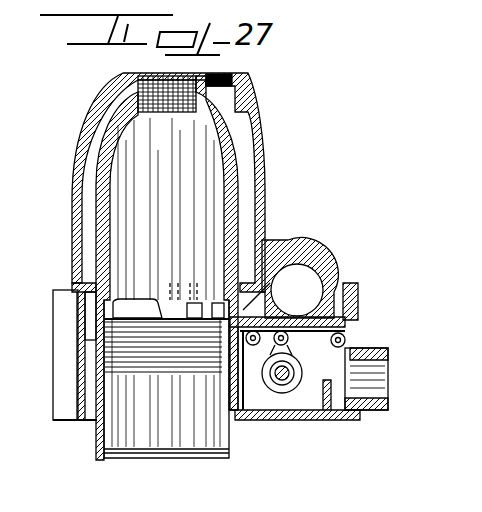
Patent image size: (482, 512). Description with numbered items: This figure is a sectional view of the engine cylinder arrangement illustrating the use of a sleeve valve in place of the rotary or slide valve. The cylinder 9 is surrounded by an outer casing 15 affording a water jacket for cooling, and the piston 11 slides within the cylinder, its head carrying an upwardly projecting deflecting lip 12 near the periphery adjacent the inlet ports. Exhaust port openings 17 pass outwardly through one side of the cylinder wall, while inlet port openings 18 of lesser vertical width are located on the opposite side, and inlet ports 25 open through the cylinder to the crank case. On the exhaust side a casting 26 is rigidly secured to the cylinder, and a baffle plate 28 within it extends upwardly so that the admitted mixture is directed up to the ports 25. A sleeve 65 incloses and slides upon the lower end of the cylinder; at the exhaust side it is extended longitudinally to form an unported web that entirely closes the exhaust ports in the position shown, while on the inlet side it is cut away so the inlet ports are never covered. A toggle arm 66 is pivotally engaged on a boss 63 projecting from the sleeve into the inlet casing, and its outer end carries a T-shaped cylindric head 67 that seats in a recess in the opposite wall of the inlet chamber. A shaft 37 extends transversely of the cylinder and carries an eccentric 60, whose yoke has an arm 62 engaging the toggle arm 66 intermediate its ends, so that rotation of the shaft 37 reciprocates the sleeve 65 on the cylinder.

The cylinder 9 is at (238, 152).
The outer casing 15 is at (262, 191).
The piston 11 is at (70, 460).
The deflecting lip 12 is at (121, 294).
The exhaust port openings 17 is at (193, 300).
The inlet port openings 18 is at (78, 353).
The inlet ports to the crank case 25 is at (207, 457).
The casting 26 is at (241, 256).
The baffle plate 28 is at (46, 347).
The shaft 37 is at (287, 386).
The eccentric 60 is at (255, 352).
The arm 62 is at (295, 352).
The boss 63 is at (247, 347).
The sleeve 65 is at (290, 266).
The toggle arm 66 is at (336, 312).
The T-shaped cylindric head 67 is at (360, 314).